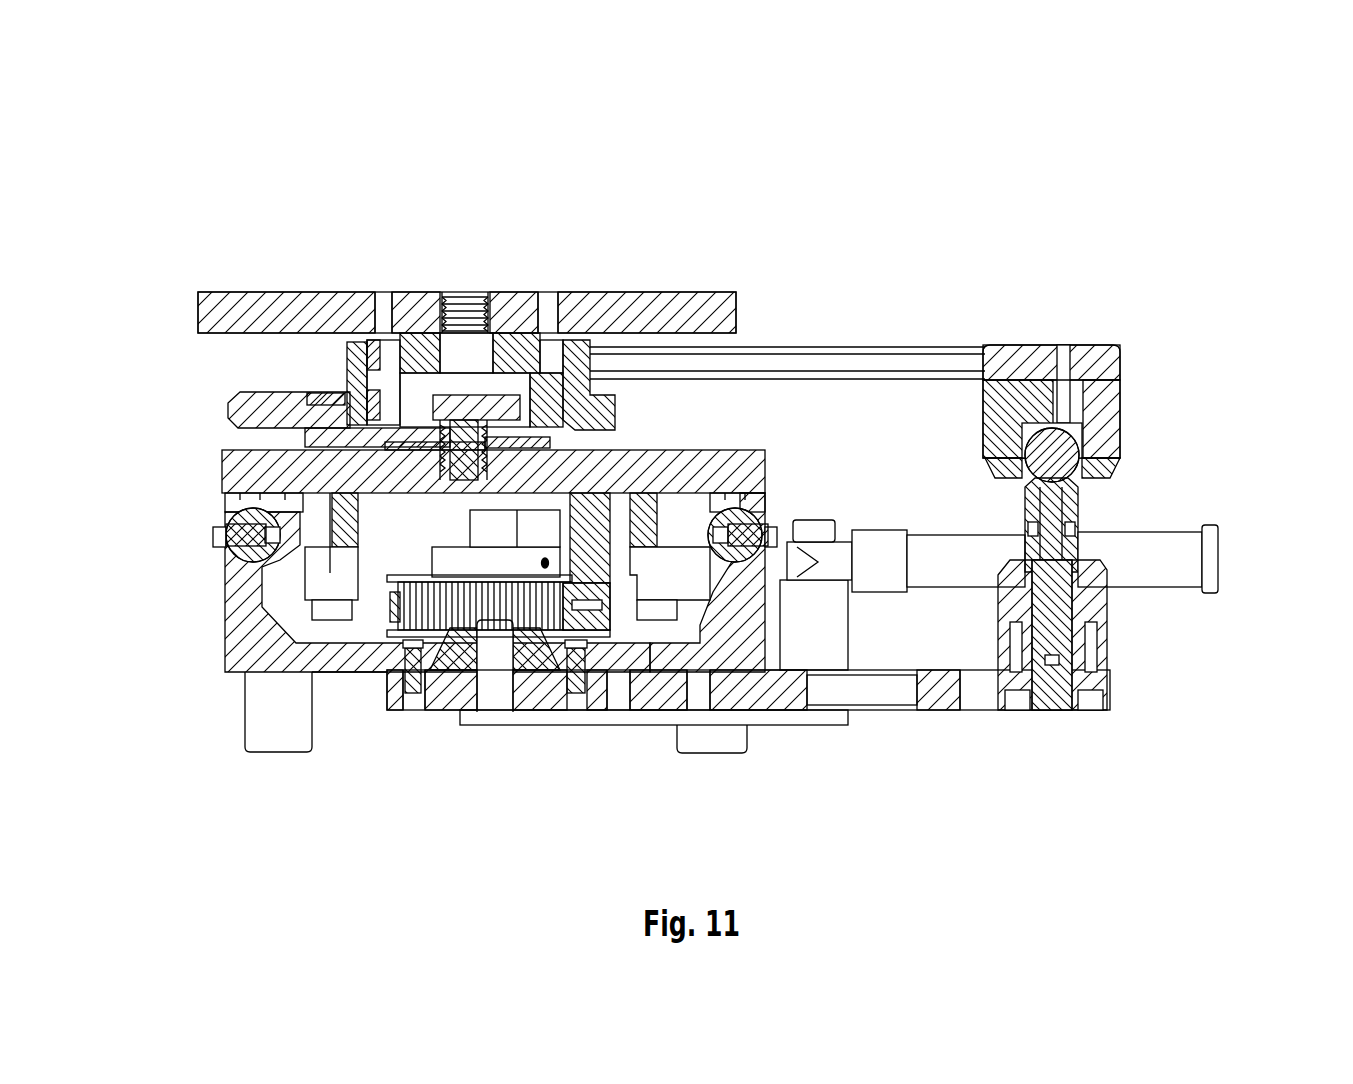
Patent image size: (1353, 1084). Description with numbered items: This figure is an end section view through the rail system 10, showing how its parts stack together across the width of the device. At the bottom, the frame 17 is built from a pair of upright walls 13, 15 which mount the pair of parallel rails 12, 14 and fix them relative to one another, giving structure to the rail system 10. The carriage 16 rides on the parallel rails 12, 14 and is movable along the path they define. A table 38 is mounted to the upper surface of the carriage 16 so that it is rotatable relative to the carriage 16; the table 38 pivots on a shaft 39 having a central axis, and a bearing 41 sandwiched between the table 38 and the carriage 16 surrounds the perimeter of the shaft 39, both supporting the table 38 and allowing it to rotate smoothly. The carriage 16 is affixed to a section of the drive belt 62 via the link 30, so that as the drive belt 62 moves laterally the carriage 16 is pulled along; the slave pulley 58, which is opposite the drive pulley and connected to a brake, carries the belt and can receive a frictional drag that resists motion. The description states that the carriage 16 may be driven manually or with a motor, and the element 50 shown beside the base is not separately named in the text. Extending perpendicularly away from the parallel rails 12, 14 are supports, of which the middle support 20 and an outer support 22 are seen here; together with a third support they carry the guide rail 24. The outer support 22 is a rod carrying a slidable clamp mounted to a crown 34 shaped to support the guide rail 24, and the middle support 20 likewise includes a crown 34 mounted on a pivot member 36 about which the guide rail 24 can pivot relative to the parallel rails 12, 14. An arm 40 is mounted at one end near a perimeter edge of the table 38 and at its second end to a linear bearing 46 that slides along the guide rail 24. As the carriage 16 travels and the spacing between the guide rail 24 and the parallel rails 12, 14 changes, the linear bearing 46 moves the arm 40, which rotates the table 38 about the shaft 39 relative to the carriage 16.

The rail system 10 is at (704, 446).
The parallel rail 12 is at (733, 493).
The upright wall 13 is at (712, 620).
The parallel rail 14 is at (250, 562).
The upright wall 15 is at (233, 605).
The carriage 16 is at (223, 473).
The frame 17 is at (338, 673).
The middle support 20 is at (940, 712).
The outer support 22 is at (1153, 570).
The guide rail 24 is at (1035, 450).
The link 30 is at (600, 565).
The crown 34 is at (1080, 507).
The pivot member 36 is at (1108, 643).
The table 38 is at (603, 292).
The shaft 39 is at (347, 353).
The arm 40 is at (893, 347).
The bearing 41 is at (378, 333).
The linear bearing 46 is at (1123, 418).
The motor 50 is at (850, 633).
The slave pulley 58 is at (463, 622).
The drive belt 62 is at (333, 637).